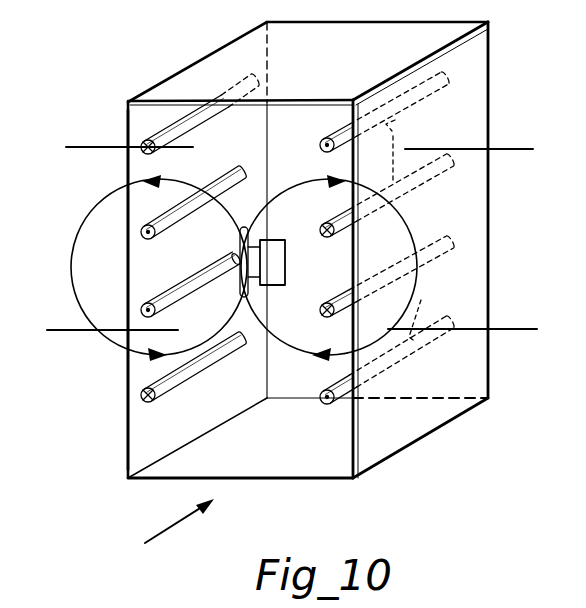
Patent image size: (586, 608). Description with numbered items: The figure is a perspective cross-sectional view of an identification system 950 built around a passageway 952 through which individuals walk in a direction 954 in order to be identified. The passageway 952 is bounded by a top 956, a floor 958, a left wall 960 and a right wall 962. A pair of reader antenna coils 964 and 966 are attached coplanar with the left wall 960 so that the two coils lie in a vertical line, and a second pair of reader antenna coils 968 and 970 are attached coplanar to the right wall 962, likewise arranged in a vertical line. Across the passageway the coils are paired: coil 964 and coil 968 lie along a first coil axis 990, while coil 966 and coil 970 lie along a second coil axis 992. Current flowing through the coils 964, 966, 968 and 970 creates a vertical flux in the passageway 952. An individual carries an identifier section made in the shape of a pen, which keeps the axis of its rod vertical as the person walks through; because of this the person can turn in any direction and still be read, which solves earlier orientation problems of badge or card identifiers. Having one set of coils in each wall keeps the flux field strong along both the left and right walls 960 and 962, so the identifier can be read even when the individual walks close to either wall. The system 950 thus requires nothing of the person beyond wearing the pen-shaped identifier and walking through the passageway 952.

The identification system 950 is at (92, 419).
The passageway 952 is at (177, 74).
The direction 954 is at (154, 532).
The top 956 is at (336, 71).
The floor 958 is at (313, 455).
The left wall 960 is at (128, 392).
The right wall 962 is at (489, 285).
The reader antenna coil 964 is at (214, 180).
The reader antenna coil 966 is at (199, 352).
The reader antenna coil 968 is at (387, 154).
The reader antenna coil 970 is at (418, 263).
The first coil axis 990 is at (106, 146).
The second coil axis 992 is at (91, 333).